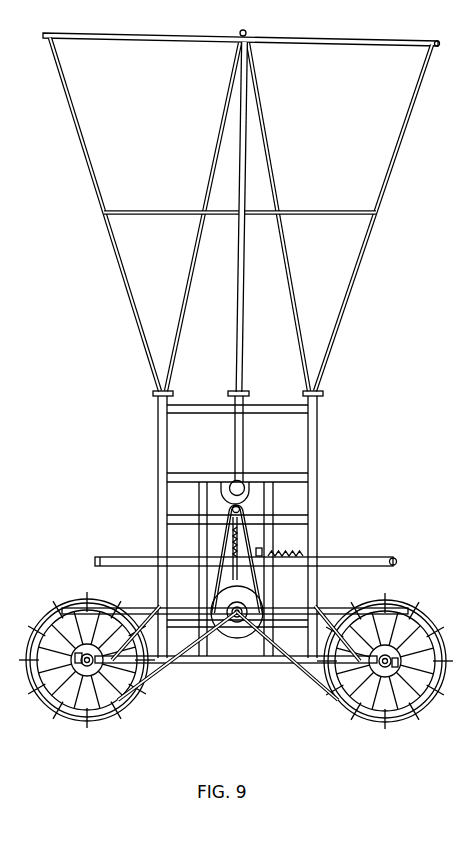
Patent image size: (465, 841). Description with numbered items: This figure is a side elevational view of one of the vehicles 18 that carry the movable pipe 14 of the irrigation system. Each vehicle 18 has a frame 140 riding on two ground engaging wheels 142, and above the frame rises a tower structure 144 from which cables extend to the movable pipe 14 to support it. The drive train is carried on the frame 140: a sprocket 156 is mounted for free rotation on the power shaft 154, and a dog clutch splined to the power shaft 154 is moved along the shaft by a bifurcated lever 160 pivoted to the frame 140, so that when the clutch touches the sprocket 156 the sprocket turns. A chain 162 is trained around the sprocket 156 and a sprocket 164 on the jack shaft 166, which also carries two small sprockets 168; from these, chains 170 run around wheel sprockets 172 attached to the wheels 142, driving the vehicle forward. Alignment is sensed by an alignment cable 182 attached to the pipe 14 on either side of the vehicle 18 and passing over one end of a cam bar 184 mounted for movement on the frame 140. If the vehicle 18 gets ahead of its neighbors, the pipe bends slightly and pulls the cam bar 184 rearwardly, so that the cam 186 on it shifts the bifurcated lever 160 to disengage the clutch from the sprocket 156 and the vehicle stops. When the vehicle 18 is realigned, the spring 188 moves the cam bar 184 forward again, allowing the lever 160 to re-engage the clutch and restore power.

The vehicle 18 is at (127, 485).
The movable pipe 14 is at (244, 481).
The frame 140 is at (318, 428).
The ground engaging wheels 142 is at (75, 720).
The tower structure 144 is at (324, 363).
The power shaft 154 is at (221, 480).
The sprocket 156 is at (160, 517).
The bifurcated lever 160 is at (240, 582).
The chain 162 is at (246, 540).
The sprocket 164 is at (350, 607).
The jack shaft 166 is at (236, 622).
The small sprockets 168 is at (218, 634).
The chains 170 is at (150, 681).
The wheel sprockets 172 is at (400, 720).
The alignment cable 182 is at (393, 557).
The cam bar 184 is at (96, 557).
The cam 186 is at (216, 585).
The spring 188 is at (303, 555).